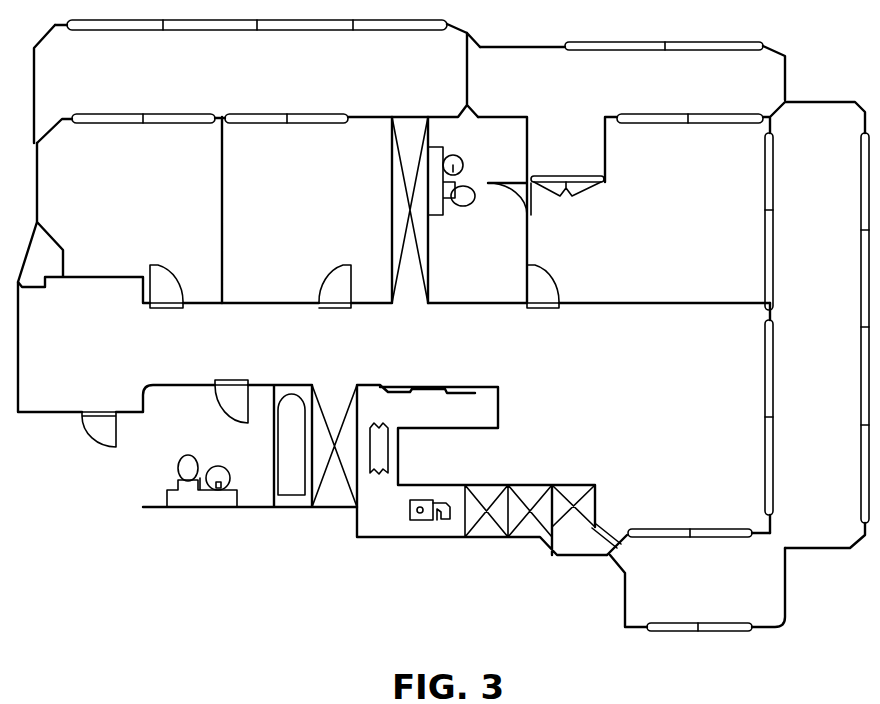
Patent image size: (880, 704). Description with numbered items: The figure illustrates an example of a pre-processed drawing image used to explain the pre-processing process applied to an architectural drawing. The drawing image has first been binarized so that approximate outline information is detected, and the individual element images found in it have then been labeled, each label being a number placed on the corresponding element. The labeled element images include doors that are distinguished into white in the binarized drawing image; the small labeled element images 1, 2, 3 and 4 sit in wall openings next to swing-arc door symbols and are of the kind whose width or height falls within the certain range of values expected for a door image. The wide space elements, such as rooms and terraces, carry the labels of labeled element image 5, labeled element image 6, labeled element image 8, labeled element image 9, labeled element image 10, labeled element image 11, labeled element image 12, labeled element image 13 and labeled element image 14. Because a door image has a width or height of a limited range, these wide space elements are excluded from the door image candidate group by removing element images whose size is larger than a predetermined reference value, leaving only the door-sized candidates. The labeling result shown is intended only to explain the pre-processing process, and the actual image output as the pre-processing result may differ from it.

The door 1 is at (354, 286).
The door 2 is at (99, 431).
The door 3 is at (335, 286).
The door 4 is at (231, 402).
The kitchen / living area 5 is at (489, 452).
The bedroom 6 is at (664, 208).
The bathroom 8 is at (479, 210).
The bedroom 9 is at (325, 208).
The bedroom 10 is at (121, 208).
The balcony 11 is at (257, 81).
The hallway 12 is at (632, 119).
The balcony 13 is at (816, 325).
The balcony 14 is at (696, 580).